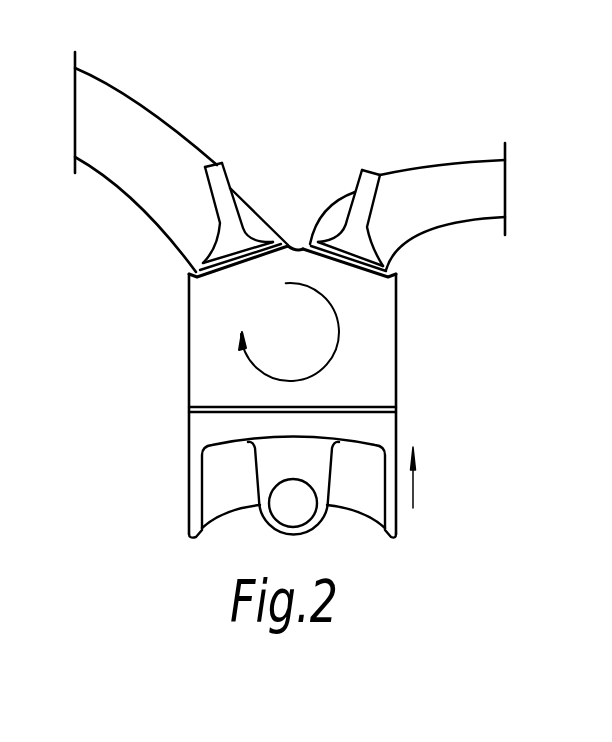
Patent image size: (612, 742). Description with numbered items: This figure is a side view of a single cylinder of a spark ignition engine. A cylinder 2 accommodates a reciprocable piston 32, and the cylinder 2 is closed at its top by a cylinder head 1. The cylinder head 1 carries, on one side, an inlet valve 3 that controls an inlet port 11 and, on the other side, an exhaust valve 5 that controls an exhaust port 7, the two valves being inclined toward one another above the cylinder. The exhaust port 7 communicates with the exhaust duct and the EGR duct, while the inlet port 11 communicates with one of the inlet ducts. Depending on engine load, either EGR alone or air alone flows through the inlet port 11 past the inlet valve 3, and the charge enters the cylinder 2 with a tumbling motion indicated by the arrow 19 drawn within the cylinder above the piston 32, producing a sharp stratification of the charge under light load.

The cylinder head 1 is at (305, 197).
The cylinder 2 is at (397, 360).
The inlet valve 3 is at (230, 208).
The exhaust valve 5 is at (357, 211).
The exhaust port 7 is at (462, 190).
The inlet port 11 is at (138, 105).
The arrow 19 is at (340, 332).
The piston 32 is at (375, 427).